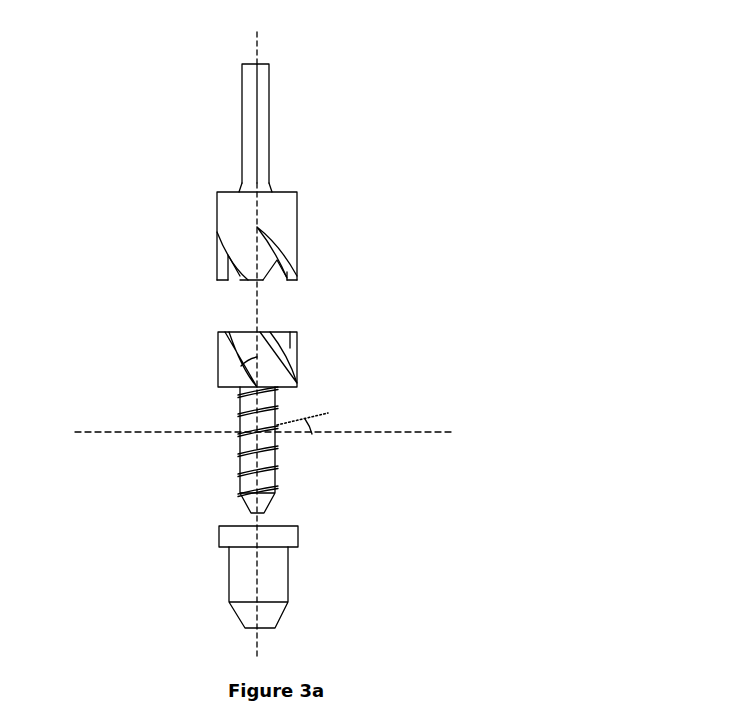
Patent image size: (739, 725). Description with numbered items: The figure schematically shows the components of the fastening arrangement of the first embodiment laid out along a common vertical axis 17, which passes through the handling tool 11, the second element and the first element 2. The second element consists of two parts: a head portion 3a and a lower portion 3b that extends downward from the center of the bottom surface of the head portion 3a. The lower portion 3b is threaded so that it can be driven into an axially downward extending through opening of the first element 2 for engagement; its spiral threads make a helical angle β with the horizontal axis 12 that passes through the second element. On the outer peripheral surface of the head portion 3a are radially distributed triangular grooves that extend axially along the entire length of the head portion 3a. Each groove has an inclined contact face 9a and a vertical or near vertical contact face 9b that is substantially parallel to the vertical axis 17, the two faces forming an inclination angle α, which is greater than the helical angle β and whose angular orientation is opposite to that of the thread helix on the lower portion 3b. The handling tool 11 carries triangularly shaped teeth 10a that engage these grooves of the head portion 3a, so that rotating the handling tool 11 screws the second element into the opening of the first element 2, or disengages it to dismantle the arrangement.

The vertical axis 17 is at (257, 332).
The handling tool 11 is at (268, 140).
The triangularly shaped teeth 10a is at (290, 253).
The head portion 3a is at (294, 355).
The inclined contact face 9a is at (235, 352).
The vertical contact face 9b is at (292, 346).
The lower portion 3b is at (275, 458).
The horizontal axis 12 is at (283, 429).
The first element 2 is at (288, 584).